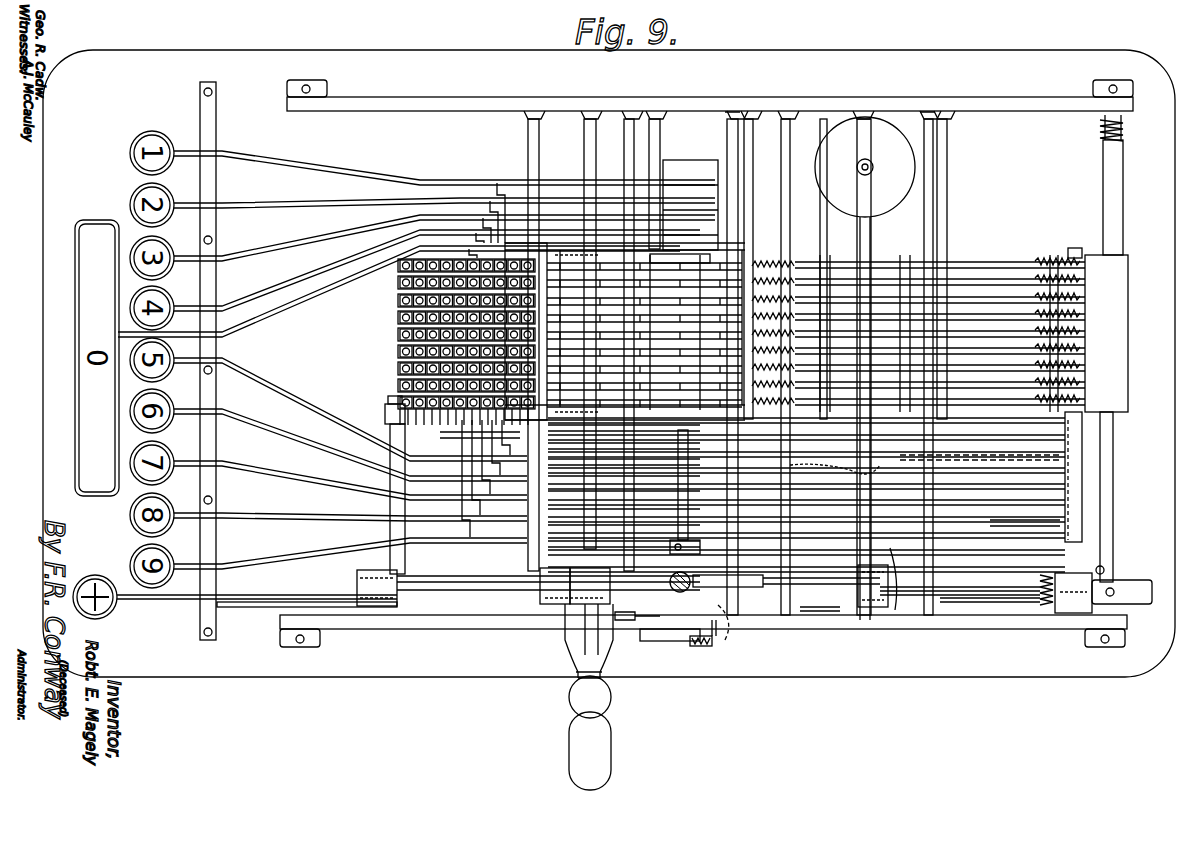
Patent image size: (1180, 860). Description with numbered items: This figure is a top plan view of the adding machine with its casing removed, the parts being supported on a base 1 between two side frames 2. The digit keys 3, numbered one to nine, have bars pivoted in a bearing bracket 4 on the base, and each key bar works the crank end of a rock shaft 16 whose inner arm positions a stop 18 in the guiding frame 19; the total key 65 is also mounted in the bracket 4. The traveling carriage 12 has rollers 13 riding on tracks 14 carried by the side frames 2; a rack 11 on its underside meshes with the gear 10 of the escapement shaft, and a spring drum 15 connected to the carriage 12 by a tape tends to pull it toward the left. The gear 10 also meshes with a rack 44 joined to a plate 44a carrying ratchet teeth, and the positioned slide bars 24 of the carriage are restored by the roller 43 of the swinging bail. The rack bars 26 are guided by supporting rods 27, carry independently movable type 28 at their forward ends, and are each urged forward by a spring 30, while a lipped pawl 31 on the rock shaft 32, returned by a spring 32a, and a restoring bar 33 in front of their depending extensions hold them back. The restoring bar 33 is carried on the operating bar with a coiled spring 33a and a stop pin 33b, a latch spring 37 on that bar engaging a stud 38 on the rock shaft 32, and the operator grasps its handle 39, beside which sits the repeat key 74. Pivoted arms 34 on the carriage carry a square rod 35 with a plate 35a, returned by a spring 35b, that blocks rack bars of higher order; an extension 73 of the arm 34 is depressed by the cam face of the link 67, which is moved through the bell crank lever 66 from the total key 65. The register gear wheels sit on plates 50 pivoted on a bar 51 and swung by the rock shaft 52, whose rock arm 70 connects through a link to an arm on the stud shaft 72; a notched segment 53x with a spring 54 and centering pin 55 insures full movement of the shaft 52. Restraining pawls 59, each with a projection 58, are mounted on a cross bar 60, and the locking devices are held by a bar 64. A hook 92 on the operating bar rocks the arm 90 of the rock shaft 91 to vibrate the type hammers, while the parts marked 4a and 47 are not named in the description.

The base 1 is at (262, 670).
The side frames 2 is at (440, 97).
The digit keys 3 is at (300, 203).
The bearing bracket 4 is at (690, 180).
The guide plate bar 4a is at (680, 259).
The gear 10 is at (880, 455).
The rack 11 is at (851, 586).
The slide bar carriage 12 is at (892, 612).
The rollers 13 is at (700, 545).
The tracks 14 is at (730, 118).
The spring drum 15 is at (865, 167).
The rock shaft 16 is at (480, 180).
The stop 18 is at (385, 412).
The guiding frame 19 is at (388, 400).
The slide bars 24 is at (1020, 480).
The rack bars 26 is at (985, 290).
The supporting rods 27 is at (738, 178).
The type 28 is at (398, 340).
The spring 30 is at (790, 260).
The pawl or lipped plate 31 is at (1128, 290).
The rock shaft 32 is at (1123, 215).
The spring 32a is at (1125, 128).
The restoring bar 33 is at (1082, 468).
The spring 33a is at (1047, 608).
The stop pin 33b is at (1114, 596).
The pivoted arms 34 is at (1015, 610).
The rod 35 is at (1068, 525).
The plate 35a is at (1070, 248).
The spring 35b is at (1045, 262).
The latch spring 37 is at (1105, 578).
The stud or pin 38 is at (1104, 568).
The handle 39 is at (590, 751).
The roller 43 is at (660, 306).
The rack 44 is at (998, 465).
The plate 44a is at (512, 605).
The post 47 is at (570, 240).
The plate or bar 50 is at (960, 350).
The bar 51 is at (948, 178).
The rock shaft 52 is at (660, 135).
The notched segment 53x is at (666, 641).
The spring 54 is at (701, 654).
The centering pin 55 is at (722, 640).
The projection 58 is at (935, 258).
The restraining pawl 59 is at (880, 268).
The cross bar 60 is at (872, 230).
The bar 64 is at (790, 230).
The total key 65 is at (170, 595).
The bell crank lever 66 is at (270, 605).
The link 67 is at (830, 612).
The rock arm 70 is at (686, 590).
The stud shaft 72 is at (735, 632).
The extension 73 is at (960, 610).
The repeat key 74 is at (590, 697).
The rock arm 90 is at (640, 620).
The rock shaft 91 is at (635, 150).
The hook 92 is at (760, 587).